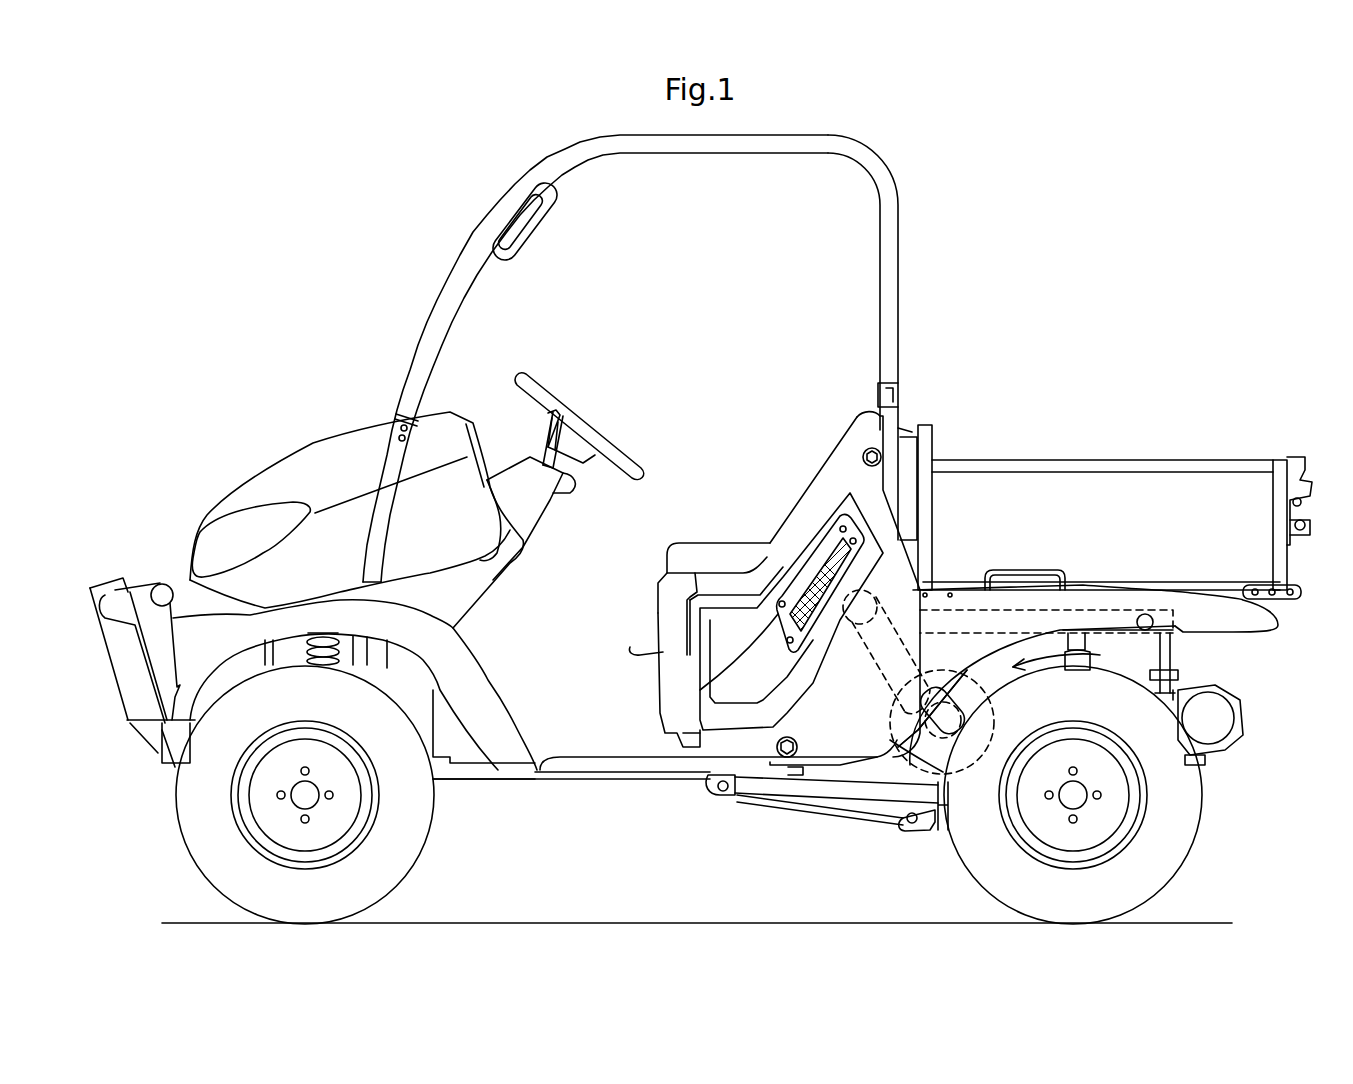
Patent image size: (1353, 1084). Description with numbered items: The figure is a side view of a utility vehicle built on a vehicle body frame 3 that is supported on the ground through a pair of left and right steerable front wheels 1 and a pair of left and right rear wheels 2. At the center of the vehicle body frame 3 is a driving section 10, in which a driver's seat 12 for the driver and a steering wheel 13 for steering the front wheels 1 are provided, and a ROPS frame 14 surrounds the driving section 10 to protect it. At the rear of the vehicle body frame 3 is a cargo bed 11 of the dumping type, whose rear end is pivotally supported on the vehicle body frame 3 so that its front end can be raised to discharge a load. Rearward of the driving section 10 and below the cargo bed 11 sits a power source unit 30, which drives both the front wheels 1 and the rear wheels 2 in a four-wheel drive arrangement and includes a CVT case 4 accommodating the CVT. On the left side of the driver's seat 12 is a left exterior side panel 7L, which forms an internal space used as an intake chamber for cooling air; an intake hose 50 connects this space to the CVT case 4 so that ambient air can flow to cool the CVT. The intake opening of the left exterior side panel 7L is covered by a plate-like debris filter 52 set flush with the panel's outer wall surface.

The front wheels 1 is at (192, 823).
The rear wheels 2 is at (1180, 853).
The vehicle body frame 3 is at (510, 782).
The CVT case 4 is at (938, 760).
The left exterior side panel 7L is at (822, 722).
The driving section 10 is at (730, 260).
The cargo bed 11 is at (1153, 483).
The driver's seat 12 is at (710, 547).
The steering wheel 13 is at (550, 397).
The ROPS frame 14 is at (543, 163).
The power source unit 30 is at (1092, 655).
The intake hose 50 is at (947, 700).
The debris filter 52 is at (702, 688).